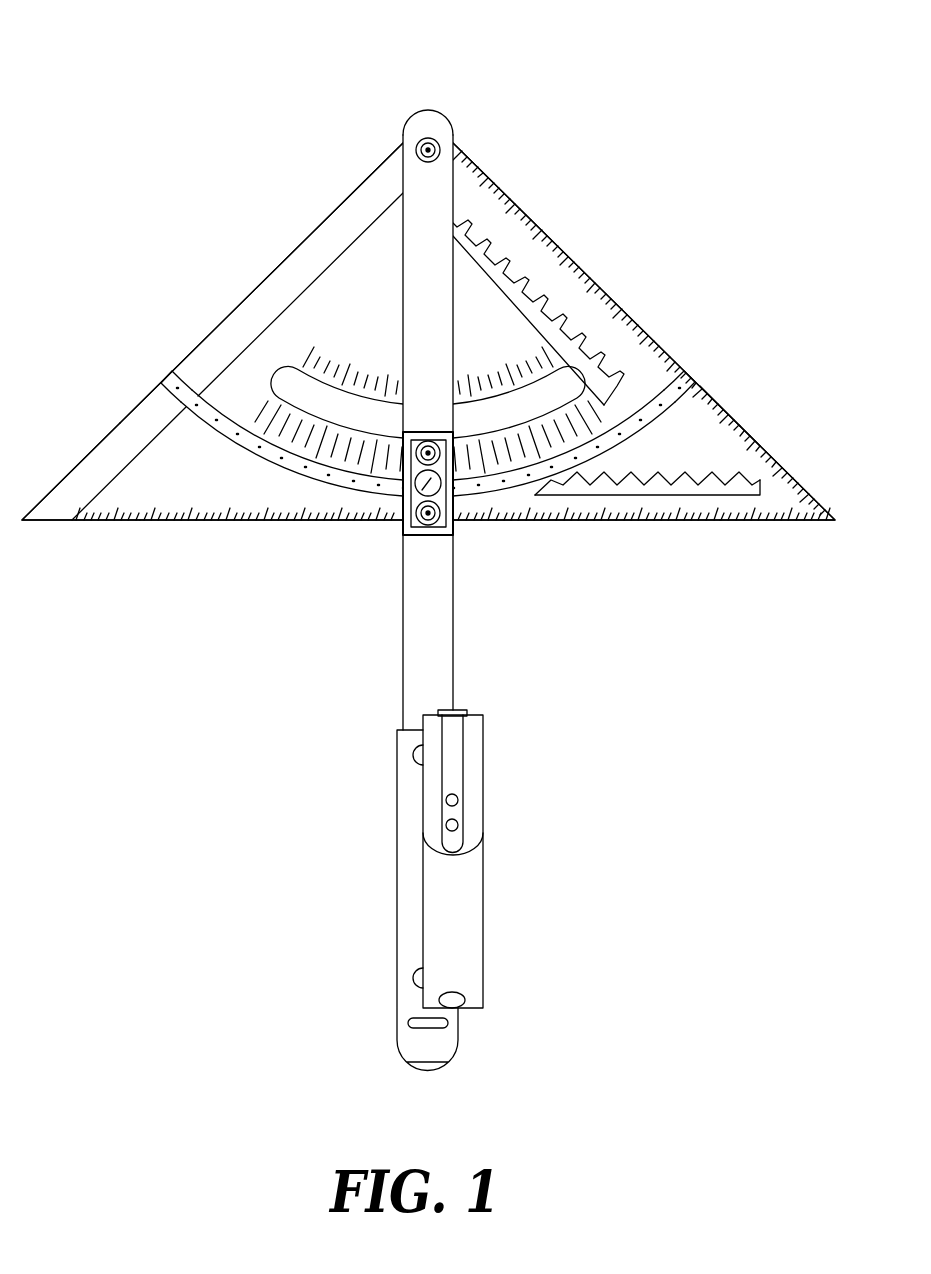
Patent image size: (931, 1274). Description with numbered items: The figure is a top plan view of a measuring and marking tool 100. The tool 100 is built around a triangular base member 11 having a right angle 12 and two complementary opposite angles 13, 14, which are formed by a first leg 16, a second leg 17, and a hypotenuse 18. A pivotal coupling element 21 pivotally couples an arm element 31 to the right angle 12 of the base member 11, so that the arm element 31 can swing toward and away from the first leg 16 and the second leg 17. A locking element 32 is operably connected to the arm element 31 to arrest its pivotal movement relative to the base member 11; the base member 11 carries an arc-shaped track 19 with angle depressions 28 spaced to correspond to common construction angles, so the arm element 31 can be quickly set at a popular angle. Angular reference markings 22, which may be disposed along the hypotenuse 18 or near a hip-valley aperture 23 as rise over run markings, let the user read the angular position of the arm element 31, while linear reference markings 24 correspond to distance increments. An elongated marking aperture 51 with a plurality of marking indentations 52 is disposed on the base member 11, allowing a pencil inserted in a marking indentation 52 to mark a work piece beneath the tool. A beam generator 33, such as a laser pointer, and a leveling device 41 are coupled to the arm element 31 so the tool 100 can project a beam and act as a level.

The measuring and marking tool 100 is at (162, 56).
The triangular base member 11 is at (300, 300).
The right angle 12 is at (404, 140).
The complementary opposite angle 13 is at (40, 524).
The complementary opposite angle 14 is at (815, 522).
The first leg 16 is at (215, 320).
The second leg 17 is at (654, 336).
The hypotenuse 18 is at (552, 522).
The track 19 is at (156, 385).
The pivotal coupling element 21 is at (444, 146).
The angular reference markings 22 is at (504, 384).
The hip-valley aperture 23 is at (344, 412).
The linear reference markings 24 is at (726, 416).
The angle depressions 28 is at (686, 386).
The arm element 31 is at (440, 620).
The locking element 32 is at (400, 532).
The beam generator 33 is at (460, 893).
The leveling device 41 is at (440, 1064).
The elongated marking aperture 51 is at (600, 306).
The marking indentations 52 is at (540, 252).